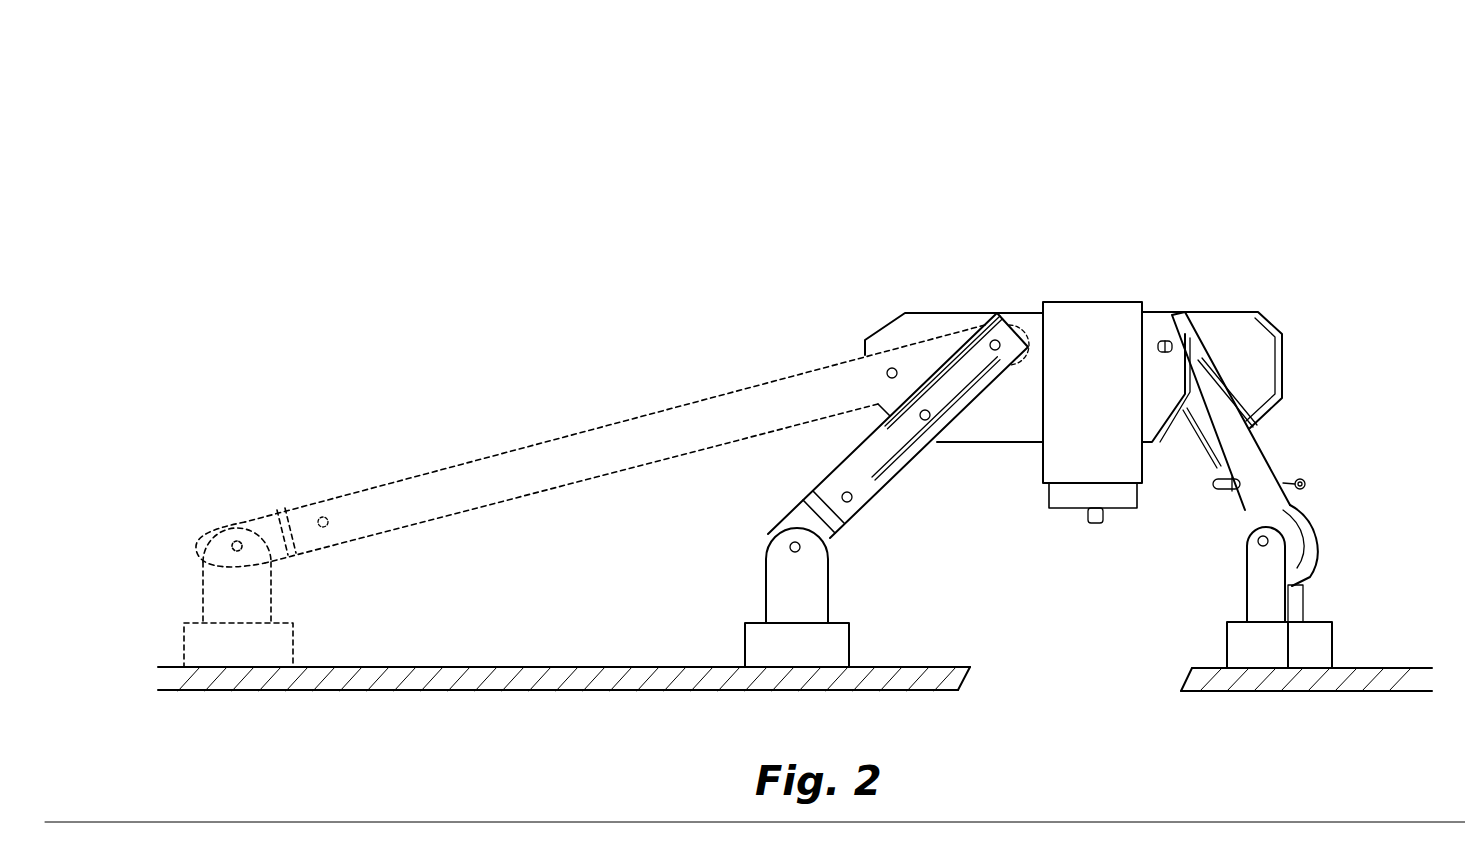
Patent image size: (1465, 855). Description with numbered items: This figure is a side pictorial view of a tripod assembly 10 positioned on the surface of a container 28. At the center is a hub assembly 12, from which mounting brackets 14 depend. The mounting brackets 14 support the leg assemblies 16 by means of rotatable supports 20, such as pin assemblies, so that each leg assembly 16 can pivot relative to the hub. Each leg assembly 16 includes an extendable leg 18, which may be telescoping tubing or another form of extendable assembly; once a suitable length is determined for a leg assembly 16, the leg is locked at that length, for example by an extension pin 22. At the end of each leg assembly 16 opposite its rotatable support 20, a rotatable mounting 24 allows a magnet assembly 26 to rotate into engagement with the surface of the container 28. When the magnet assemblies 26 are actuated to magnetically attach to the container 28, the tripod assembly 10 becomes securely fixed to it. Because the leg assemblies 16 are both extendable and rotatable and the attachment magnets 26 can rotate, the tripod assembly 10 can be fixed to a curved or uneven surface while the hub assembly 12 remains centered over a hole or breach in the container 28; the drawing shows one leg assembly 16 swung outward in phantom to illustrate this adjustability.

The tripod assembly 10 is at (816, 313).
The hub assembly 12 is at (1100, 320).
The mounting bracket 14 is at (912, 318).
The leg assembly 16 is at (644, 364).
The extendable leg 18 is at (475, 462).
The rotatable support 20 is at (997, 342).
The extension pin 22 is at (323, 518).
The rotatable mounting 24 is at (238, 544).
The magnet assembly 26 is at (203, 635).
The container 28 is at (304, 688).